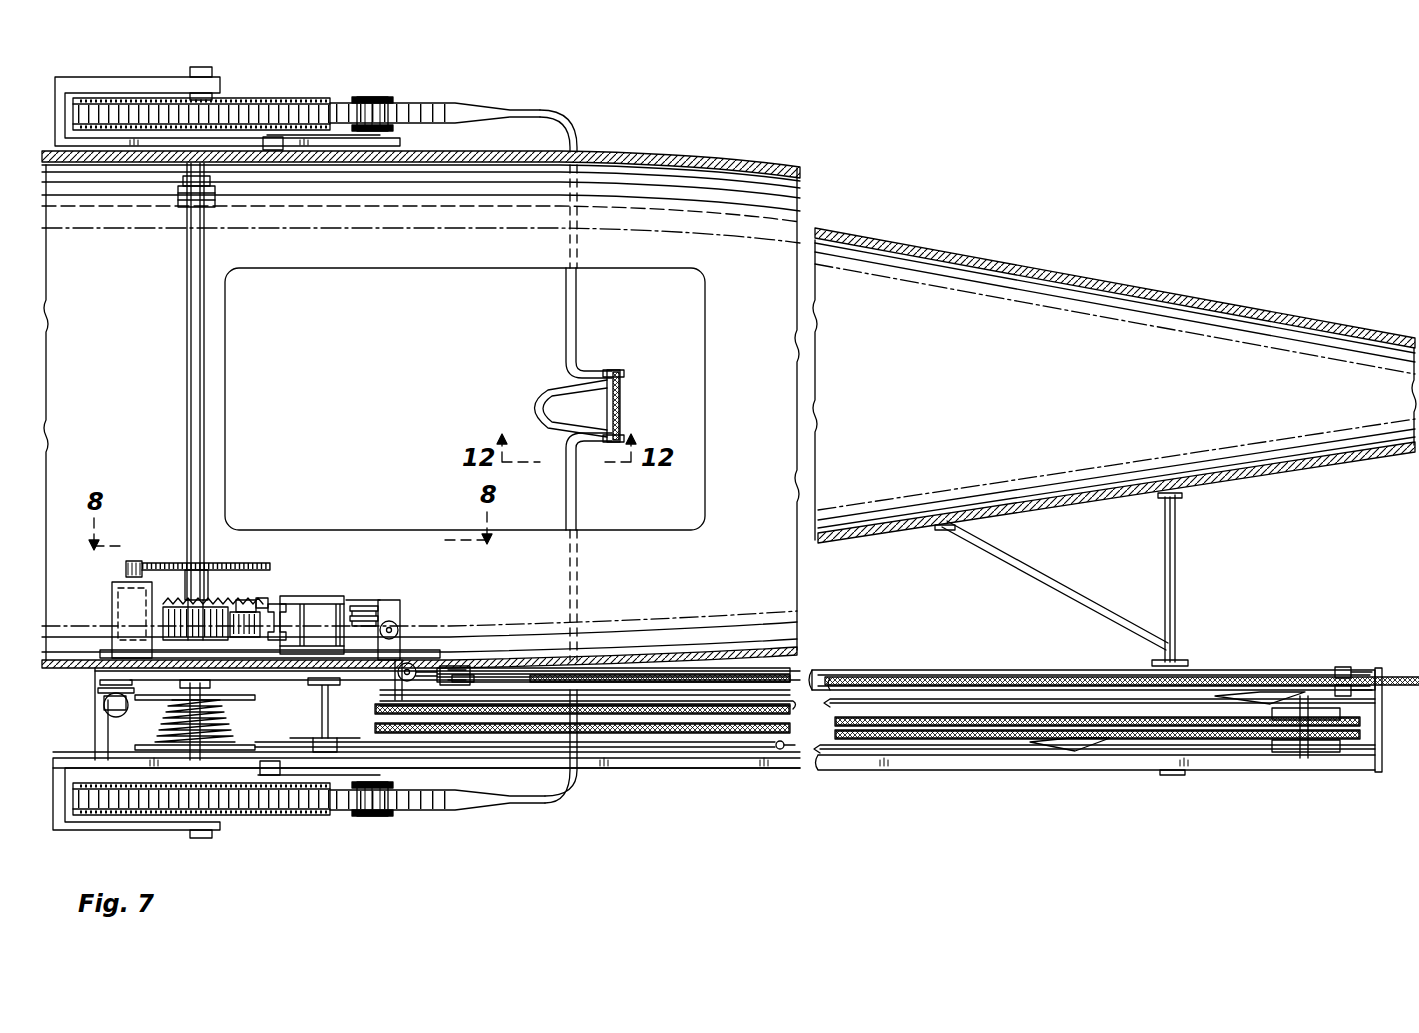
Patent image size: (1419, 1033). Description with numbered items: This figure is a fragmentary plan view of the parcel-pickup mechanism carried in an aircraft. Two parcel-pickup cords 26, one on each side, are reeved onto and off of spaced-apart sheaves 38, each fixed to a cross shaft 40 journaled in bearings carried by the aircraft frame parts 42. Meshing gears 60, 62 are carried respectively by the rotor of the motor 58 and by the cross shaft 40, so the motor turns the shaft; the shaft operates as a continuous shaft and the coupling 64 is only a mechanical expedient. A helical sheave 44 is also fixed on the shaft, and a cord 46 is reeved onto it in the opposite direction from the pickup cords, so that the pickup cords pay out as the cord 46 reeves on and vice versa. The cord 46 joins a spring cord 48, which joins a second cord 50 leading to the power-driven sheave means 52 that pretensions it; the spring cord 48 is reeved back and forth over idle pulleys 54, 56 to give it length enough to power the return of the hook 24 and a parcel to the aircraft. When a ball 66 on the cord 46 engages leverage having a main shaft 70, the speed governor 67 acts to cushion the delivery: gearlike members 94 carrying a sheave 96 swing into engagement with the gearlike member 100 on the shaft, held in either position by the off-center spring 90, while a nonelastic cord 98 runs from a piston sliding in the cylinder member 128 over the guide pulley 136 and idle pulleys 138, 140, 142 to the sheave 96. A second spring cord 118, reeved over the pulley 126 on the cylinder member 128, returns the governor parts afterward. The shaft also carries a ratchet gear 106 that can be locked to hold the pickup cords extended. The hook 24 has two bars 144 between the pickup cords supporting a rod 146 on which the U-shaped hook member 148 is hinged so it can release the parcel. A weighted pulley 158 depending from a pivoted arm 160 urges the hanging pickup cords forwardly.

The hook 24 is at (568, 394).
The parcel-pickup cord 26 is at (345, 105).
The sheave 38 is at (268, 98).
The cross shaft 40 is at (190, 180).
The aircraft frame part 42 is at (130, 77).
The helical sheave 44 is at (228, 730).
The cord 46 is at (612, 755).
The spring cord 48 is at (932, 743).
The second cord 50 is at (722, 706).
The power-driven sheave means 52 is at (96, 694).
The idle pulley 54 is at (380, 726).
The idle pulley 56 is at (1342, 738).
The motor 58 is at (112, 600).
The gear 60 is at (130, 561).
The gear 62 is at (218, 565).
The coupling 64 is at (180, 207).
The ball 66 is at (782, 750).
The speed governor 67 is at (802, 664).
The main shaft 70 is at (318, 720).
The off-center spring 90 is at (170, 598).
The gearlike member 94 is at (272, 610).
The sheave 96 is at (284, 600).
The nonelastic cord 98 is at (480, 668).
The gearlike member 100 is at (168, 618).
The ratchet gear 106 is at (186, 570).
The second spring cord 118 is at (948, 682).
The pulley 126 is at (1362, 672).
The cylinder member 128 is at (497, 680).
The guide pulley 136 is at (412, 662).
The idle pulley 138 is at (393, 620).
The idle pulley 140 is at (364, 604).
The idle pulley 142 is at (298, 612).
The bar 144 is at (578, 336).
The rod 146 is at (618, 404).
The U-shaped hook member 148 is at (528, 408).
The weighted pulley 158 is at (378, 97).
The pivoted arm 160 is at (340, 150).